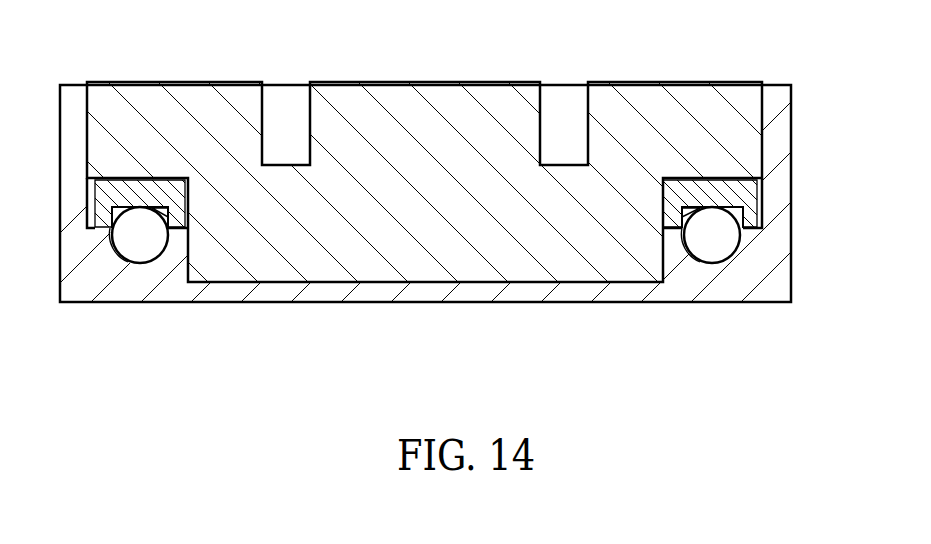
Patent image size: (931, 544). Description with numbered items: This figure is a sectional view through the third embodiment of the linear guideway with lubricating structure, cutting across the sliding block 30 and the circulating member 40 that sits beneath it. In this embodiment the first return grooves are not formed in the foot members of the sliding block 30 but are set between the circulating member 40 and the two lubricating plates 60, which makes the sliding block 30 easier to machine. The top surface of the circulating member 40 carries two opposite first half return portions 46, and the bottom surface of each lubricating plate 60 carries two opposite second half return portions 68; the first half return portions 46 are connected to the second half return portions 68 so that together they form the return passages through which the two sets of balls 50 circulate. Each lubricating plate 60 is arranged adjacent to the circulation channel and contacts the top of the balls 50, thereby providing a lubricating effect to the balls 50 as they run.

The sliding block 30 is at (645, 108).
The circulating member 40 is at (780, 315).
The first half return portions 46 is at (175, 242).
The balls 50 is at (144, 240).
The lubricating plates 60 is at (718, 170).
The second half return portions 68 is at (178, 217).